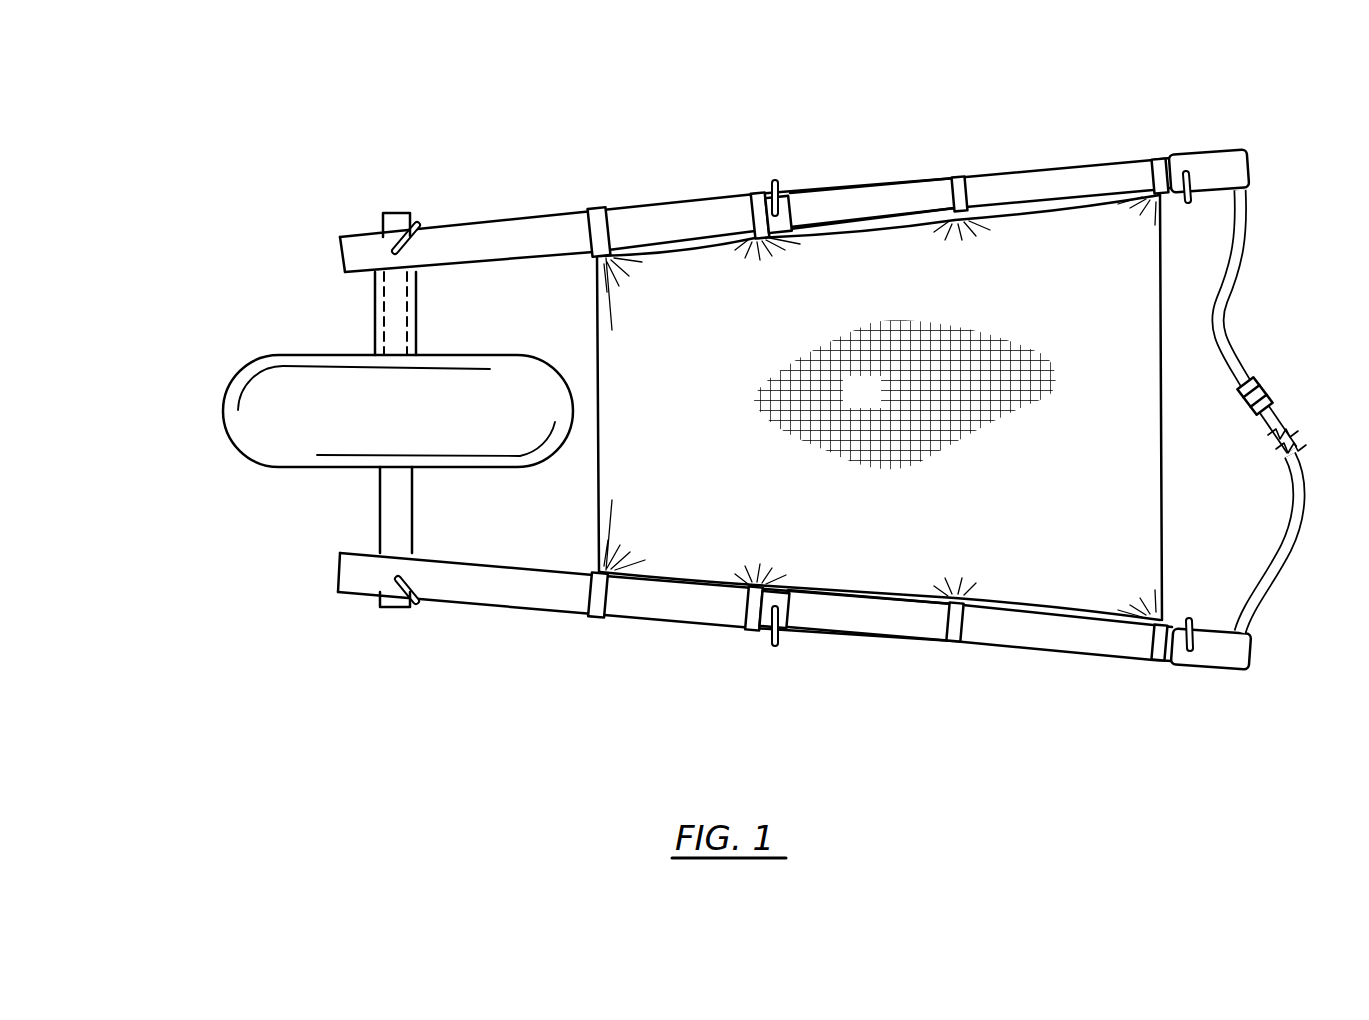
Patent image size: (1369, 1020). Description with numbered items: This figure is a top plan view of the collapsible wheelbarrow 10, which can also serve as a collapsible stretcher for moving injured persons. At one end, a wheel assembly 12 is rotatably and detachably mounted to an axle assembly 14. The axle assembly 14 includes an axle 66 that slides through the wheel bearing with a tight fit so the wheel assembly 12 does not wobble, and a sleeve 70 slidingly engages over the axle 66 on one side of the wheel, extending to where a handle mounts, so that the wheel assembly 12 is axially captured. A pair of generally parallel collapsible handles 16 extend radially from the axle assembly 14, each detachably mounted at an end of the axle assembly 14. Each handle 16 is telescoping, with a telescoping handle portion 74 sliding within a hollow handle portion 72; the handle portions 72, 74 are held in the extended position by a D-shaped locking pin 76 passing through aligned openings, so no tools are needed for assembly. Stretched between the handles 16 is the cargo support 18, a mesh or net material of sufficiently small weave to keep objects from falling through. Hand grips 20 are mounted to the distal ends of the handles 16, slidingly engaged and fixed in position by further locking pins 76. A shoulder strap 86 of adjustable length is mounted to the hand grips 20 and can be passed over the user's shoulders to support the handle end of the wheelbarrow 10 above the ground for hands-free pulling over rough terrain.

The collapsible wheelbarrow 10 is at (298, 133).
The wheel assembly 12 is at (242, 372).
The axle assembly 14 is at (393, 410).
The collapsible handles 16 is at (630, 208).
The cargo support 18 is at (877, 405).
The hand grips 20 is at (1222, 150).
The axle 66 is at (412, 530).
The sleeve 70 is at (378, 318).
The hollow handle portion 72 is at (685, 204).
The telescoping handle portion 74 is at (813, 208).
The D-shaped locking pin 76 is at (417, 222).
The shoulder strap 86 is at (1237, 307).